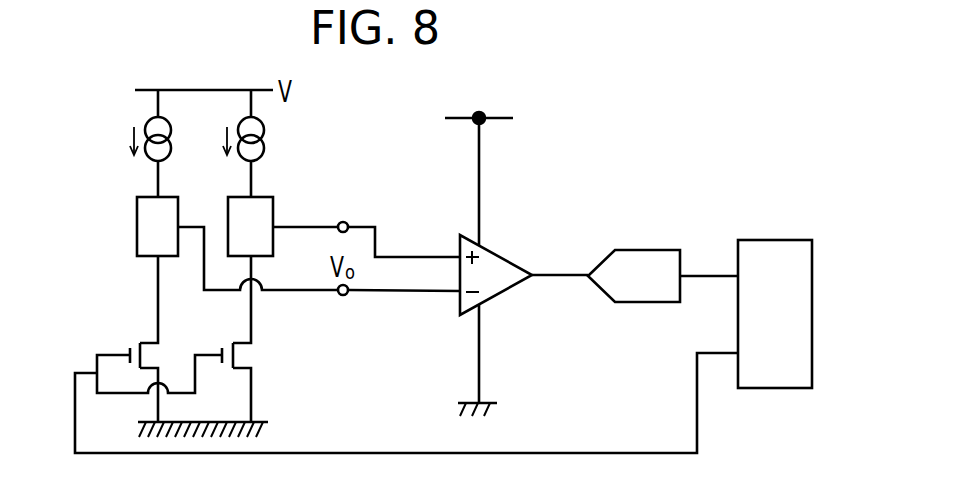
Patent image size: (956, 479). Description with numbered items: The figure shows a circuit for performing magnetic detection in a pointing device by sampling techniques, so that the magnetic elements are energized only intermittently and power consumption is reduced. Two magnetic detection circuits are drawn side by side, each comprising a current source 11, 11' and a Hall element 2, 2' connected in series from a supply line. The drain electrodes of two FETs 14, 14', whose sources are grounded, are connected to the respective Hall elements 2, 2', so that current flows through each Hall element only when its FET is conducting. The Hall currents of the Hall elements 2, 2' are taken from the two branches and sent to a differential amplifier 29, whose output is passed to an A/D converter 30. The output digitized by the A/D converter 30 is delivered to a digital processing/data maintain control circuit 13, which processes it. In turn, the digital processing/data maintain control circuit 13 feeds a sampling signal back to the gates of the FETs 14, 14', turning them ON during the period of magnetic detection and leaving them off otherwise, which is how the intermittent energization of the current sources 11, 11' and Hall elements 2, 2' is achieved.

The current source 11 is at (139, 143).
The current source 11' is at (287, 143).
The Hall element 2 is at (137, 226).
The Hall element 2' is at (278, 220).
The FET 14 is at (159, 339).
The FET 14' is at (270, 382).
The differential amplifier 29 is at (513, 250).
The A/D converter 30 is at (642, 250).
The digital processing/data maintain control circuit 13 is at (775, 238).